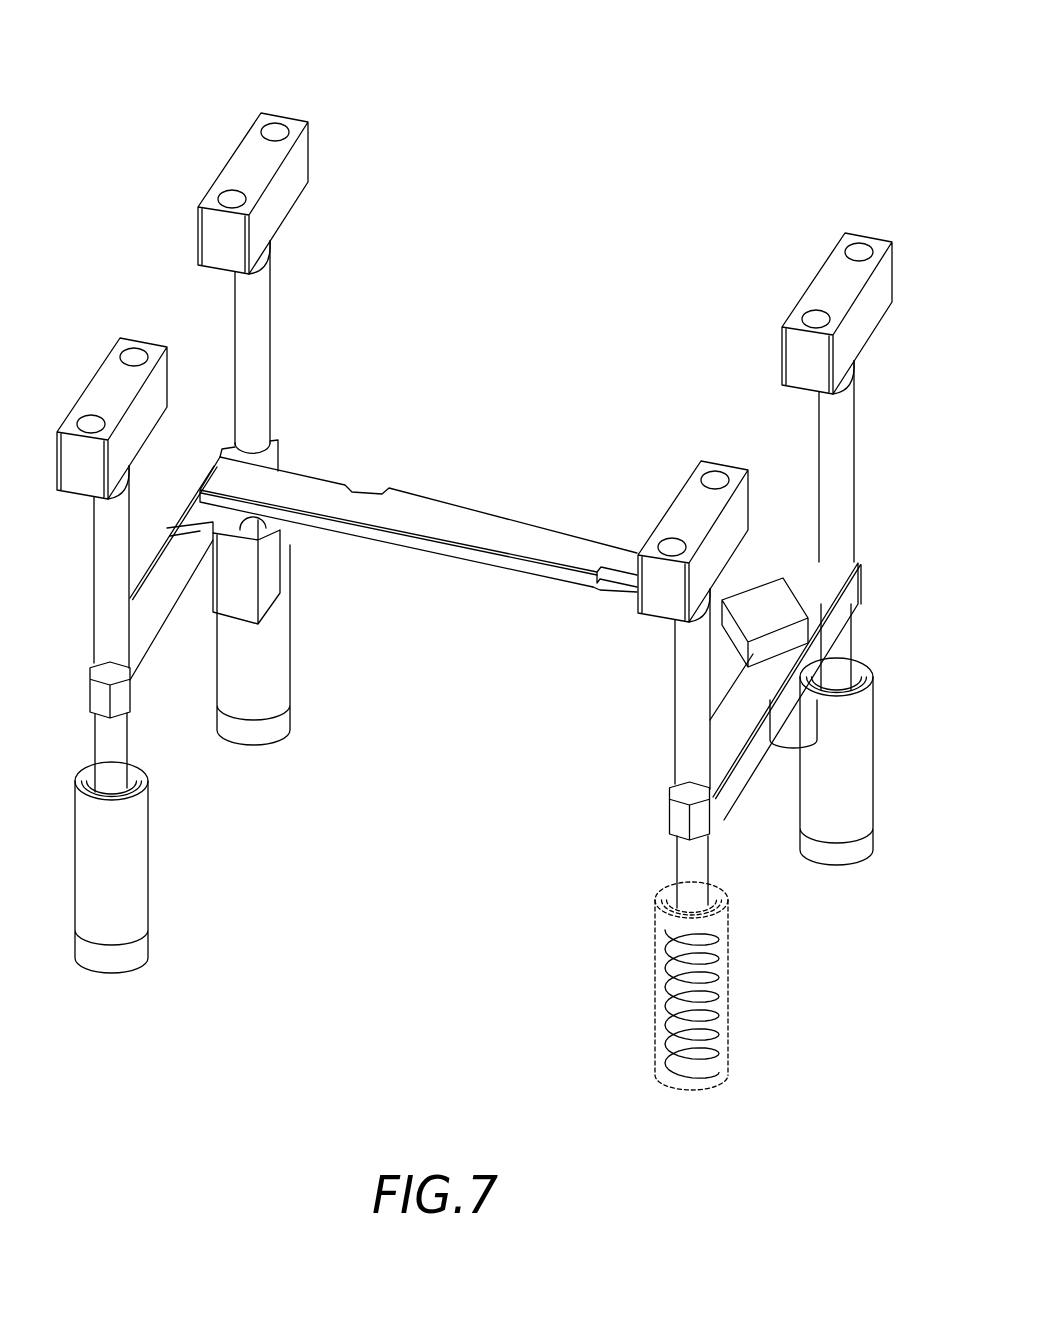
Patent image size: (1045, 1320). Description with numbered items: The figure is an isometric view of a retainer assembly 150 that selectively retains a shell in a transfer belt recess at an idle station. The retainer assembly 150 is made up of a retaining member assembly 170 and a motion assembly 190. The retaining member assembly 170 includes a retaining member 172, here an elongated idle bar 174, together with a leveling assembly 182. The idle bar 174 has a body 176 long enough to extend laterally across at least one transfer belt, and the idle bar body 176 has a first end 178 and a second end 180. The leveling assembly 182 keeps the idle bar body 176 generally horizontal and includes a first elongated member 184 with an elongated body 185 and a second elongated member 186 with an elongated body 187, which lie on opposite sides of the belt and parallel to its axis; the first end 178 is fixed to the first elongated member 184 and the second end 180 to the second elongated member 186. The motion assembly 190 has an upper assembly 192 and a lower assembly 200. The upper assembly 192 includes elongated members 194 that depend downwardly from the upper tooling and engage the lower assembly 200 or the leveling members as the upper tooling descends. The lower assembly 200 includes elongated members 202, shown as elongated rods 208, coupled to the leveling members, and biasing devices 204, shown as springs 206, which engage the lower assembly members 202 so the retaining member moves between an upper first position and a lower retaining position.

The retainer assembly 150 is at (190, 105).
The retaining member assembly 170 is at (199, 449).
The retaining member 172 is at (435, 508).
The idle bar 174 is at (602, 548).
The idle bar body 176 is at (500, 525).
The first end 178 is at (227, 473).
The second end 180 is at (762, 578).
The leveling assembly 182 is at (735, 790).
The first elongated member 184 is at (150, 570).
The elongated body 185 is at (175, 550).
The second elongated member 186 is at (728, 805).
The elongated body 187 is at (747, 755).
The motion assembly 190 is at (692, 1118).
The upper assembly 192 is at (365, 220).
The elongated members 194 is at (242, 293).
The lower assembly 200 is at (625, 962).
The elongated members 202 is at (102, 740).
The biasing devices 204 is at (735, 1065).
The springs 206 is at (720, 978).
The elongated rods 208 is at (125, 735).